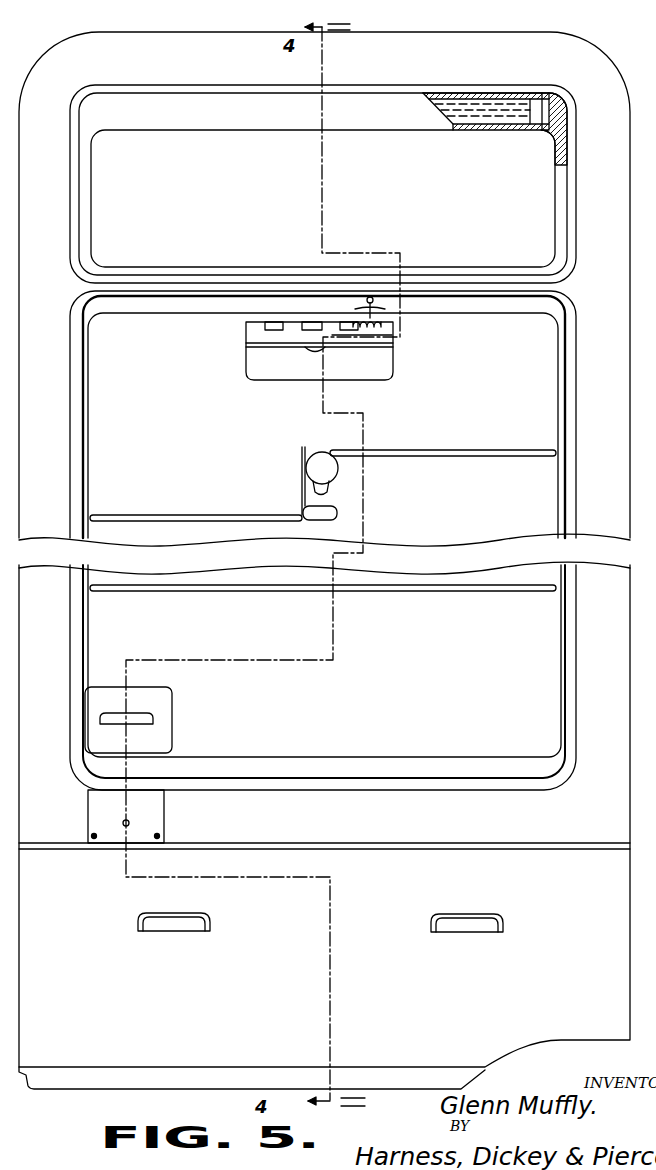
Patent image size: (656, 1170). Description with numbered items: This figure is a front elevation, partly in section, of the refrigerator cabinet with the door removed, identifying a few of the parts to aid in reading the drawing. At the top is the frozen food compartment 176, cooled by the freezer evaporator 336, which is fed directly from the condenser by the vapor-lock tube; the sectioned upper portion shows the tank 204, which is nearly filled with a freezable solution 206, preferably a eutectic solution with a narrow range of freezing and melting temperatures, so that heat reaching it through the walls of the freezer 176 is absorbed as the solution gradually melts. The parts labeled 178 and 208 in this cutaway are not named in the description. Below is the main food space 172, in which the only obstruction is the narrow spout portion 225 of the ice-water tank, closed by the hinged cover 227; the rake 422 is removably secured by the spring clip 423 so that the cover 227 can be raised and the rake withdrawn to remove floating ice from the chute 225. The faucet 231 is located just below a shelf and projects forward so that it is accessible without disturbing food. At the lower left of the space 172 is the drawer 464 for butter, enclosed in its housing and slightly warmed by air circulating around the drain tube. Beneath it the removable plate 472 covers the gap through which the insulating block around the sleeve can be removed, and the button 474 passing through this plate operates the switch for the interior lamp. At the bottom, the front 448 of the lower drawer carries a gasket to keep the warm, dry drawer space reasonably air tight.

The main food space 172 is at (460, 667).
The frozen food compartment 176 is at (470, 208).
The door inner panel 178 is at (470, 132).
The tank 204 is at (484, 95).
The freezable solution 206 is at (546, 113).
The door insulation 208 is at (518, 106).
The spout portion 225 is at (383, 369).
The hinged cover 227 is at (316, 349).
The faucet 231 is at (317, 457).
The freezer evaporator 336 is at (512, 116).
The rake 422 is at (378, 299).
The spring clip 423 is at (353, 308).
The drawer front 448 is at (195, 977).
The drawer 464 is at (165, 708).
The removable plate 472 is at (158, 813).
The button 474 is at (124, 827).